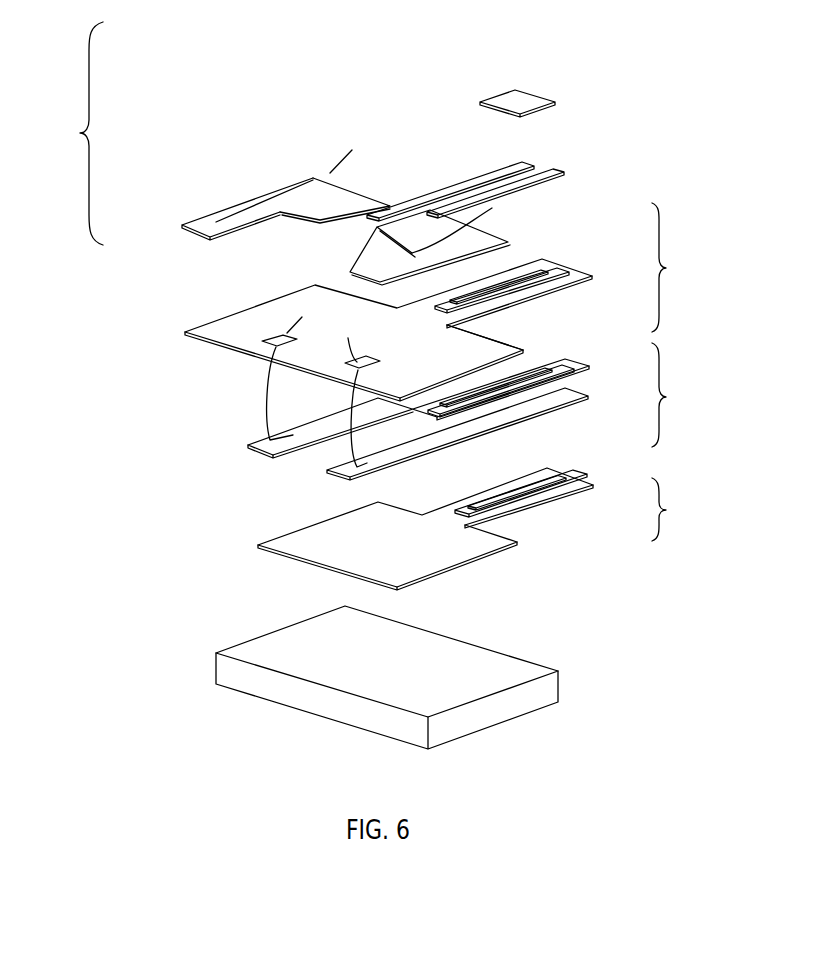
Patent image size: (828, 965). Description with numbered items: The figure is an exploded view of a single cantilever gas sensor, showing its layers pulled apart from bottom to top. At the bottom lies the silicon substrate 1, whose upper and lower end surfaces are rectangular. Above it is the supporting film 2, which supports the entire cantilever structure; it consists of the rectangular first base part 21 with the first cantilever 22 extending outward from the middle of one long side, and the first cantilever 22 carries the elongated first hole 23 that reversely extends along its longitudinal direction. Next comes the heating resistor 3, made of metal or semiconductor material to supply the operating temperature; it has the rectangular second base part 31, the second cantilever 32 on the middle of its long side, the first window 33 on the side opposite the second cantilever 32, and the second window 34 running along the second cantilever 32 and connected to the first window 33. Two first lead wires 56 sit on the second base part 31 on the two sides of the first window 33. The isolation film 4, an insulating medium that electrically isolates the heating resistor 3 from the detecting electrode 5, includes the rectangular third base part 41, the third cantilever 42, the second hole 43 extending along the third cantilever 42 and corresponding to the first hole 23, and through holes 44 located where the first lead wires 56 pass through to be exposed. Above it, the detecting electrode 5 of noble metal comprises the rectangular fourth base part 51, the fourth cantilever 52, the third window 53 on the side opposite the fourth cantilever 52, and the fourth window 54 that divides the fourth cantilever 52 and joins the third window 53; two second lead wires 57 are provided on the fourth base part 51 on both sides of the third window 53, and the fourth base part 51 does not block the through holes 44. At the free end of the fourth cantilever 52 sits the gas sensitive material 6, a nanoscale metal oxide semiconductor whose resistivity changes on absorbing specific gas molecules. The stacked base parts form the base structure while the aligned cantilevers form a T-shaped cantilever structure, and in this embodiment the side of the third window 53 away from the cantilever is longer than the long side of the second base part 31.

The silicon substrate 1 is at (475, 657).
The supporting film 2 is at (474, 526).
The first base part 21 is at (475, 548).
The first cantilever 22 is at (512, 516).
The first hole 23 is at (548, 488).
The heating resistor 3 is at (469, 409).
The second base part 31 is at (438, 438).
The second cantilever 32 is at (522, 396).
The first window 33 is at (338, 453).
The second window 34 is at (538, 378).
The isolation film 4 is at (437, 293).
The third base part 41 is at (490, 353).
The third cantilever 42 is at (502, 295).
The second hole 43 is at (522, 280).
The through holes 44 is at (375, 361).
The detecting electrode 5 is at (347, 234).
The fourth base part 51 is at (217, 207).
The fourth cantilever 52 is at (498, 162).
The third window 53 is at (293, 240).
The fourth window 54 is at (463, 190).
The first lead wires 56 is at (262, 378).
The second lead wires 57 is at (328, 172).
The gas sensitive material 6 is at (520, 95).